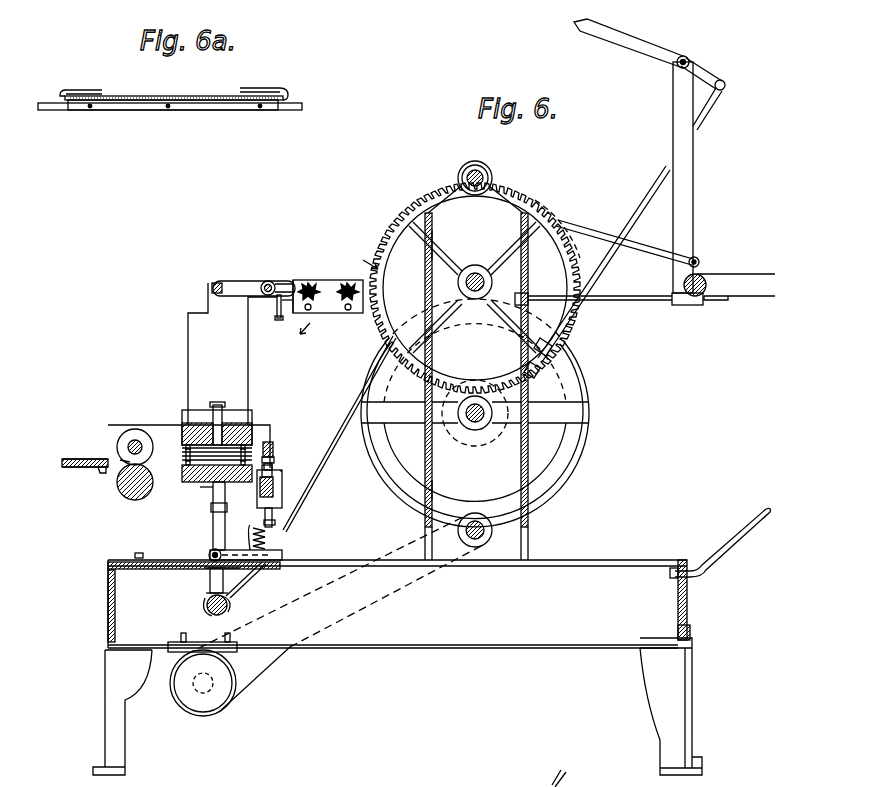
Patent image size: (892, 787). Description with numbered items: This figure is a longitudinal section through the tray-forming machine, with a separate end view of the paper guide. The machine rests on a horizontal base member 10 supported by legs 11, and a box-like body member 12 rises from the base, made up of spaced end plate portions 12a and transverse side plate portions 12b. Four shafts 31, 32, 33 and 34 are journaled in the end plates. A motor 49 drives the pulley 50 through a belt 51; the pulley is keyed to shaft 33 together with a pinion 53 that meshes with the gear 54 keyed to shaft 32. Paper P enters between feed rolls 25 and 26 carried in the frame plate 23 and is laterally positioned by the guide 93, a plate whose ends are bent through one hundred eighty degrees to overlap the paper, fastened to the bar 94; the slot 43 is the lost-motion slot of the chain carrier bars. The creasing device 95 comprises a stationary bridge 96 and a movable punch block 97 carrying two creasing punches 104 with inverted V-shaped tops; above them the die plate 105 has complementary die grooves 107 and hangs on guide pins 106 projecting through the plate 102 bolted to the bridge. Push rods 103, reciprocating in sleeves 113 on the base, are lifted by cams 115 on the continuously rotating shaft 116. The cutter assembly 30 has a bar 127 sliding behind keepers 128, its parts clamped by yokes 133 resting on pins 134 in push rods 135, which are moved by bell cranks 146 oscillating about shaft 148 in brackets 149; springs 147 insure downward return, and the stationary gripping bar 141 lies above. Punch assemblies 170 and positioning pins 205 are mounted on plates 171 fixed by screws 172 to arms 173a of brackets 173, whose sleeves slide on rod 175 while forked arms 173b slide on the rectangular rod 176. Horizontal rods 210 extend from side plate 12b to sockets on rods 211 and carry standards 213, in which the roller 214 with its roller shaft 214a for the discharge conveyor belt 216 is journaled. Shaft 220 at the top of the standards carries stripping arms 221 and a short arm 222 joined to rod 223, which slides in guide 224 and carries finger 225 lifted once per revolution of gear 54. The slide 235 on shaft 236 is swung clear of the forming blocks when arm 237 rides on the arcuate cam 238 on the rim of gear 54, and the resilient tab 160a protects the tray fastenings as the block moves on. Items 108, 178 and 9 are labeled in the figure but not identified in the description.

In FIG. 6A, the paper P is at (160, 96).
In FIG. 6A, the slot 43 is at (282, 92).
In FIG. 6A, the bar 94 is at (288, 106).
In FIG. 6, the bar 94 is at (100, 471).
In FIG. 6, the guide 93 is at (70, 458).
In FIG. 6, the gear 54 is at (412, 205).
In FIG. 6, the top shaft 31 is at (472, 162).
In FIG. 6, the shaft 32 is at (477, 299).
In FIG. 6, the body member 12 is at (502, 180).
In FIG. 6, the end plate portions 12a is at (459, 245).
In FIG. 6, the side plate portions 12b is at (522, 487).
In FIG. 6, the pulley 50 is at (576, 408).
In FIG. 6, the shaft 33 is at (472, 432).
In FIG. 6, the pinion 53 is at (475, 424).
In FIG. 6, the bottom shaft 34 is at (478, 548).
In FIG. 6, the base member 10 is at (399, 604).
In FIG. 6, the legs 11 is at (125, 757).
In FIG. 6, the tab 160a is at (560, 772).
In FIG. 6, the rods 211 is at (735, 556).
In FIG. 6, the motor 49 is at (220, 684).
In FIG. 6, the belt 51 is at (273, 652).
In FIG. 6, the frame plate 23 is at (190, 326).
In FIG. 6, the upper feed roll 26 is at (119, 441).
In FIG. 6, the lower feed roll 25 is at (118, 486).
In FIG. 6, the creasing device 95 is at (173, 496).
In FIG. 6, the die plate 105 is at (185, 435).
In FIG. 6, the plate 102 is at (215, 405).
In FIG. 6, the guide pins 106 is at (223, 425).
In FIG. 6, the die grooves 107 is at (204, 470).
In FIG. 6, the creasing punches 104 is at (187, 476).
In FIG. 6, the sleeves 113 is at (213, 522).
In FIG. 6, the punch block 97 is at (200, 488).
In FIG. 6, the bridge 96 is at (268, 442).
In FIG. 6, the plate 108 is at (269, 456).
In FIG. 6, the stationary bar 141 is at (270, 463).
In FIG. 6, the cutter assembly 30 is at (288, 470).
In FIG. 6, the keepers 128 is at (283, 478).
In FIG. 6, the bar 127 is at (283, 487).
In FIG. 6, the yokes 133 is at (275, 498).
In FIG. 6, the pins 134 is at (277, 522).
In FIG. 6, the push rods 135 is at (267, 540).
In FIG. 6, the springs 147 is at (282, 555).
In FIG. 6, the shaft 148 is at (208, 556).
In FIG. 6, the brackets 149 is at (205, 570).
In FIG. 6, the push rods 103 is at (210, 585).
In FIG. 6, the bell cranks 146 is at (244, 588).
In FIG. 6, the cams 115 is at (206, 602).
In FIG. 6, the shaft 116 is at (230, 606).
In FIG. 6, the arm 173b is at (240, 281).
In FIG. 6, the rod 176 is at (214, 289).
In FIG. 6, the rod 175 is at (265, 281).
In FIG. 6, the brackets 173 is at (276, 276).
In FIG. 6, the arm 173a is at (290, 283).
In FIG. 6, the plates 171 is at (326, 290).
In FIG. 6, the punch assemblies 170 is at (309, 282).
In FIG. 6, the positioning pins 205 is at (348, 313).
In FIG. 6, the screws 172 is at (276, 306).
In FIG. 6, the spring 178 is at (292, 333).
In FIG. 6, the section line 9 is at (335, 294).
In FIG. 6, the standards 213 is at (694, 140).
In FIG. 6, the shaft 220 is at (690, 60).
In FIG. 6, the arms 221 is at (620, 35).
In FIG. 6, the short arm 222 is at (706, 76).
In FIG. 6, the rod 223 is at (710, 109).
In FIG. 6, the slide 235 is at (665, 173).
In FIG. 6, the arm 237 is at (650, 250).
In FIG. 6, the arcuate cam 238 is at (560, 215).
In FIG. 6, the shaft 236 is at (700, 262).
In FIG. 6, the roller 214 is at (708, 285).
In FIG. 6, the discharge conveyor belt 216 is at (760, 300).
In FIG. 6, the roller shaft 214a is at (695, 305).
In FIG. 6, the horizontal rods 210 is at (646, 302).
In FIG. 6, the finger 225 is at (560, 345).
In FIG. 6, the guide 224 is at (546, 378).